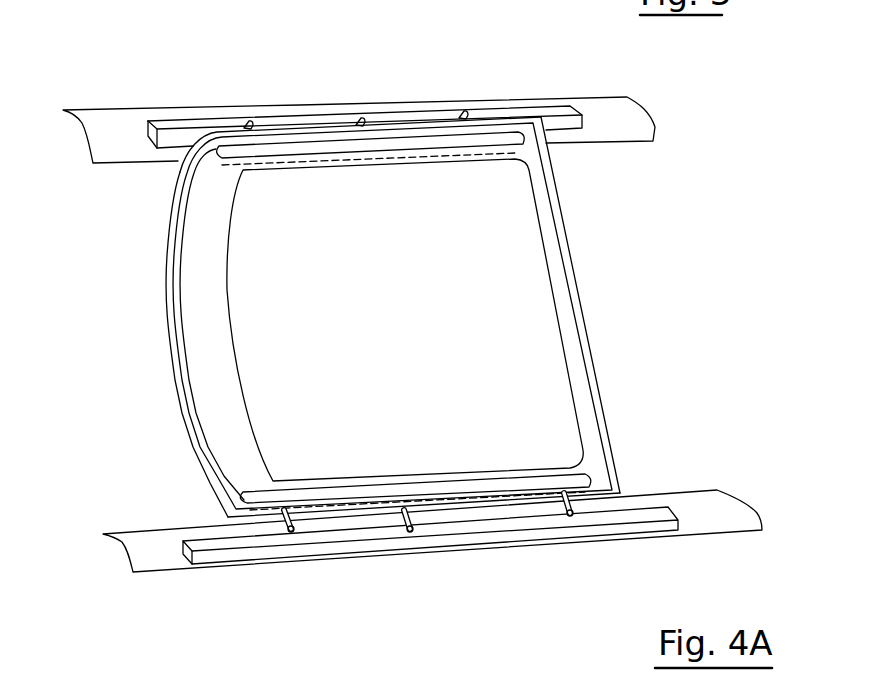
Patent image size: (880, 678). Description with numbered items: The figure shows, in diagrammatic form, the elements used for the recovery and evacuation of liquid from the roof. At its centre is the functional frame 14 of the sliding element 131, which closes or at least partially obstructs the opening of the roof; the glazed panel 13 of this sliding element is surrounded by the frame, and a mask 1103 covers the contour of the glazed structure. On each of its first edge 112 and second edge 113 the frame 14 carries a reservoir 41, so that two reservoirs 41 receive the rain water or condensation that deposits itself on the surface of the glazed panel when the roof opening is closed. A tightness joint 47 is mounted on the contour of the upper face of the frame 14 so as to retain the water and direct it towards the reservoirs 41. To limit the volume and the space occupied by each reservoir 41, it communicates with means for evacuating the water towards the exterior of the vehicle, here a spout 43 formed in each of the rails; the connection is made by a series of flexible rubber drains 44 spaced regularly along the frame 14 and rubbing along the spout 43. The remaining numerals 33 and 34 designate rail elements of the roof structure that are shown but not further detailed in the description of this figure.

The display panel 13 is at (457, 368).
The functional frame 14 is at (575, 297).
The upper connecting element 33 is at (165, 6).
The lower connecting element 34 is at (372, 6).
The reservoir 41 is at (405, 140).
The spout 43 is at (190, 120).
The flexible drain 44 is at (360, 122).
The tightness joint 47 is at (177, 325).
The first edge 112 is at (620, 470).
The second edge 113 is at (167, 257).
The sliding element 131 is at (637, 373).
The mask 1103 is at (167, 570).